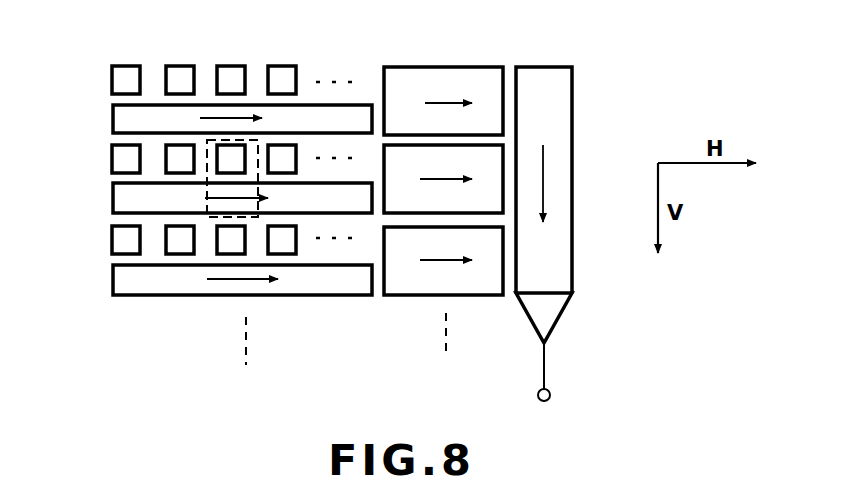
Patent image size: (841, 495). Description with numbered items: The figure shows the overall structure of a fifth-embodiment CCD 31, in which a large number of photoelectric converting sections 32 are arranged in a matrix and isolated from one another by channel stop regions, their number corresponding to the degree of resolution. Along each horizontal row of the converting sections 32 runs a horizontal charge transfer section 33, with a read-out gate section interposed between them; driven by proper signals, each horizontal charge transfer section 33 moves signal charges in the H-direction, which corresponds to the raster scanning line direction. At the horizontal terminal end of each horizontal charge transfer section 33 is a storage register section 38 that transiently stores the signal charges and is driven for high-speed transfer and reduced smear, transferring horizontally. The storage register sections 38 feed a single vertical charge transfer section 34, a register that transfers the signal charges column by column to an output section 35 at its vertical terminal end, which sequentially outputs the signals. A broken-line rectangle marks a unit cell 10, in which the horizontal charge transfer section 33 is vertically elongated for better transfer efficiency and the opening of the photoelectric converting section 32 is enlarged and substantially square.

The unit cell 10 is at (207, 186).
The CCD 31 is at (124, 308).
The photoelectric converting sections 32 is at (173, 78).
The horizontal charge transfer section 33 is at (116, 121).
The vertical charge transfer section 34 is at (563, 100).
The output section 35 is at (550, 313).
The storage register sections 38 is at (413, 158).